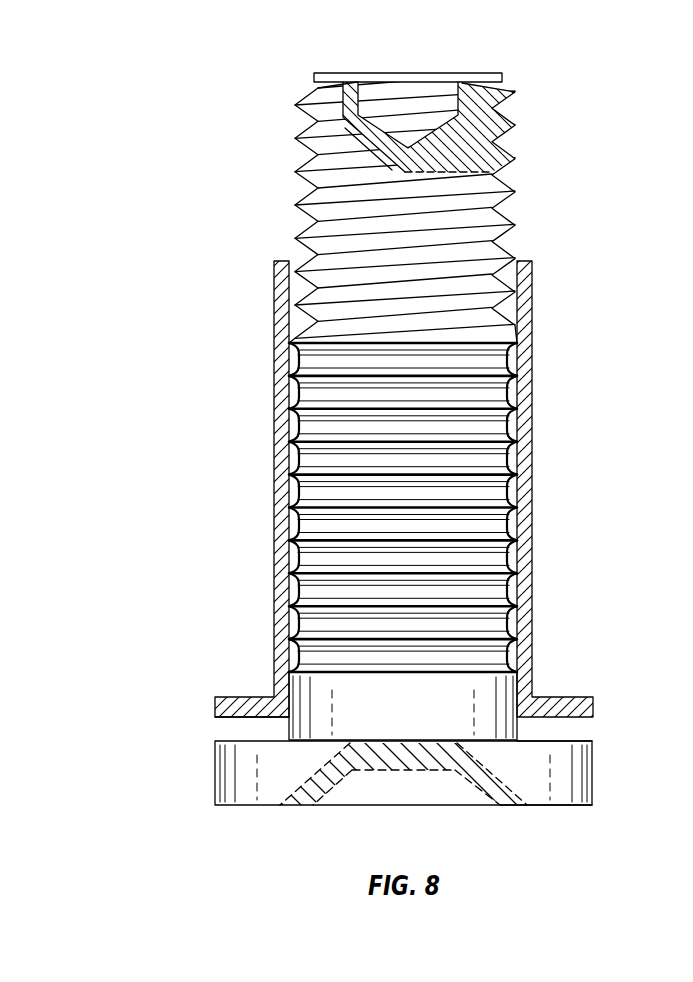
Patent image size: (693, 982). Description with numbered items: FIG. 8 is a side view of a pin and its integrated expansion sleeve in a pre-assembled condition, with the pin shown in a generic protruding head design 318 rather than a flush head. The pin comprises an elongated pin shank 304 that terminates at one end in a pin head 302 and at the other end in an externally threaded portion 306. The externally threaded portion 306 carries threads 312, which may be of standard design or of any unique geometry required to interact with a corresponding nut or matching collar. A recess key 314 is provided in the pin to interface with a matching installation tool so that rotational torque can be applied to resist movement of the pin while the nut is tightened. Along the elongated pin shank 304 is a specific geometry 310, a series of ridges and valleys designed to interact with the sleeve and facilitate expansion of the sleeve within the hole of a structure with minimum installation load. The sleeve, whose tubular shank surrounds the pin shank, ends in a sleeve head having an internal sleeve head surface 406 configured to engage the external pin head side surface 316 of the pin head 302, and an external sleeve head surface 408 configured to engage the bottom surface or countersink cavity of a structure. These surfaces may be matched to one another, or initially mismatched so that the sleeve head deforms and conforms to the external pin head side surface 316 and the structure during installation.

The pin head 302 is at (242, 770).
The elongated pin shank 304 is at (417, 508).
The externally threaded portion 306 is at (313, 238).
The specific geometry 310 is at (285, 434).
The threads 312 is at (503, 183).
The recess key 314 is at (417, 107).
The external pin head side surface 316 is at (577, 740).
The protruding head design 318 is at (593, 803).
The internal sleeve head surface 406 is at (227, 717).
The external sleeve head surface 408 is at (245, 697).